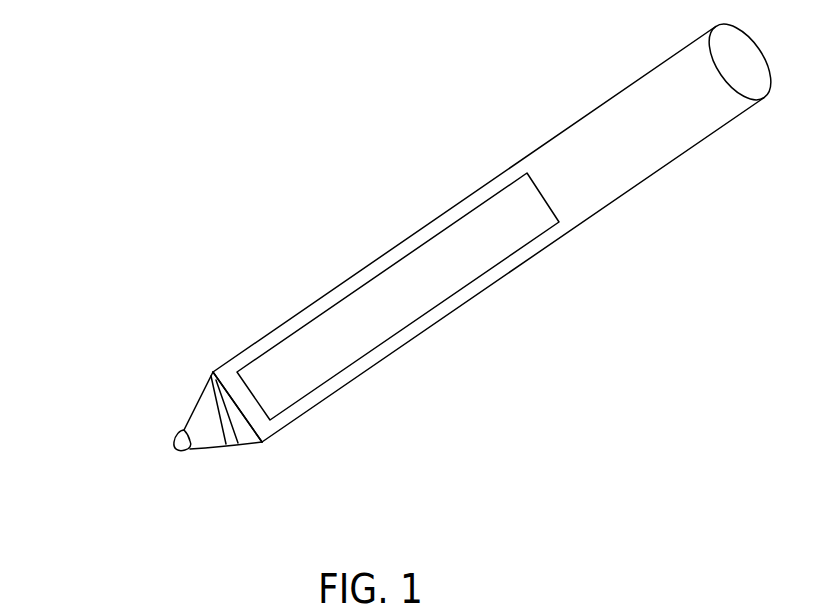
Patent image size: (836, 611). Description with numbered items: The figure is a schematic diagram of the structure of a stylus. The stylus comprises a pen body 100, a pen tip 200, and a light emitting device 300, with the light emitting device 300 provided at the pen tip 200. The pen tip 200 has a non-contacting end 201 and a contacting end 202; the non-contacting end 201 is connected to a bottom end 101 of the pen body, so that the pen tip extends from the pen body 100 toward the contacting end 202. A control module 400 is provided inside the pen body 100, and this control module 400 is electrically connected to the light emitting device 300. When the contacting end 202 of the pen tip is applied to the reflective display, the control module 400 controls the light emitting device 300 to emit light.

The pen body 100 is at (337, 290).
The bottom end of the pen body 101 is at (262, 442).
The pen tip 200 is at (197, 425).
The non-contacting end of the pen tip 201 is at (262, 442).
The contacting end of the pen tip 202 is at (175, 452).
The light emitting device 300 is at (236, 443).
The control module 400 is at (490, 233).